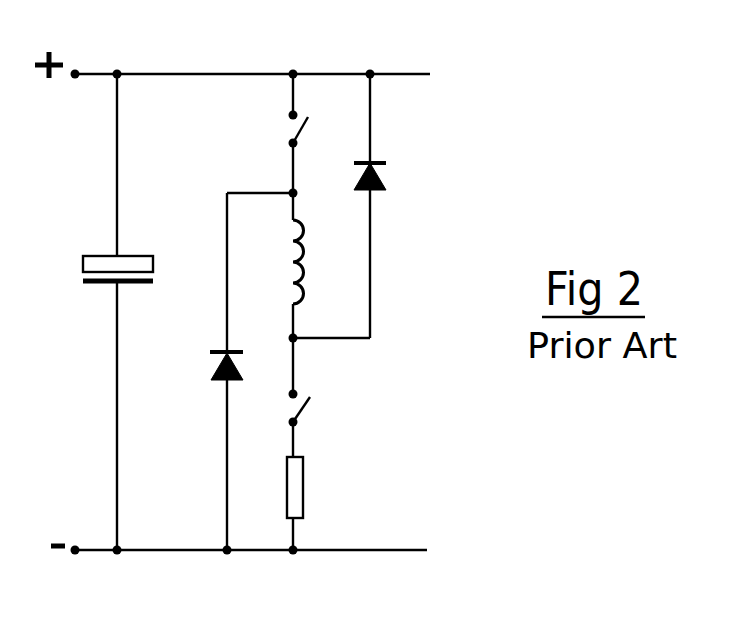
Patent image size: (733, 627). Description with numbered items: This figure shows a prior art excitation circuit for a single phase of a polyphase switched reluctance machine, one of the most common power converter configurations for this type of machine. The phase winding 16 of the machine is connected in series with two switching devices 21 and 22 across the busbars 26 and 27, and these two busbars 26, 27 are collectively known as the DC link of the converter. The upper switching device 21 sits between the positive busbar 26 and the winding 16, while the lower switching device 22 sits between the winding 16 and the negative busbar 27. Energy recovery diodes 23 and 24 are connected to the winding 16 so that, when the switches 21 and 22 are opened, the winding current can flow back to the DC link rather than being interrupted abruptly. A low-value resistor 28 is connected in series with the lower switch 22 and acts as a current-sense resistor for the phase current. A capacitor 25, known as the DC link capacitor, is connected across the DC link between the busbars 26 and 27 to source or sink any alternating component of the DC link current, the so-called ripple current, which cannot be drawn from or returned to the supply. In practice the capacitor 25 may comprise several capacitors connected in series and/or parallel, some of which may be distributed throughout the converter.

The phase winding 16 is at (310, 240).
The switching device 21 is at (288, 130).
The switching device 22 is at (308, 408).
The energy recovery diode 23 is at (390, 170).
The energy recovery diode 24 is at (212, 360).
The DC link capacitor 25 is at (80, 272).
The busbar 26 is at (198, 74).
The busbar 27 is at (178, 550).
The resistor 28 is at (303, 483).